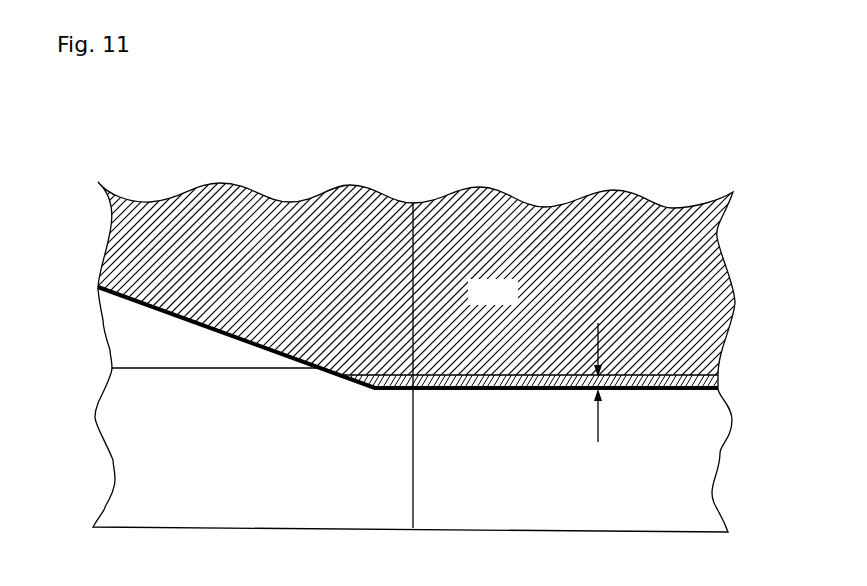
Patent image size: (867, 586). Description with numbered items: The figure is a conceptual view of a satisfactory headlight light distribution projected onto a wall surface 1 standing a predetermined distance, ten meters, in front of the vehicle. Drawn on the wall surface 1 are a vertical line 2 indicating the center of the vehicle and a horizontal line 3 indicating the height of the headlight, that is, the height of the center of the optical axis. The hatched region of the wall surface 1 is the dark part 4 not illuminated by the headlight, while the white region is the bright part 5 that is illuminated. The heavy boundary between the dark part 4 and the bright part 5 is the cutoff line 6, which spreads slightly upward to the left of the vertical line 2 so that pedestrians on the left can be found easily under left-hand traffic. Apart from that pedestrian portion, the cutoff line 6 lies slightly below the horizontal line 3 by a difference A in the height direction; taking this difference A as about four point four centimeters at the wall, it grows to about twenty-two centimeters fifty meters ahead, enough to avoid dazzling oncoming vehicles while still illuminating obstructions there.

The wall surface 1 is at (495, 190).
The vertical line 2 is at (413, 248).
The horizontal line 3 is at (133, 367).
The dark part 4 is at (470, 302).
The bright part 5 is at (470, 476).
The cutoff line 6 is at (662, 392).
The difference in the height direction A is at (582, 392).